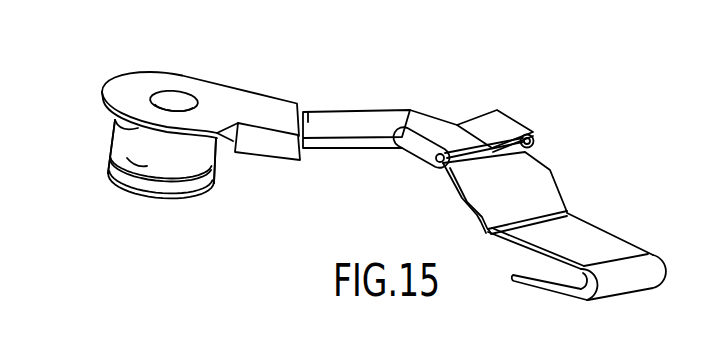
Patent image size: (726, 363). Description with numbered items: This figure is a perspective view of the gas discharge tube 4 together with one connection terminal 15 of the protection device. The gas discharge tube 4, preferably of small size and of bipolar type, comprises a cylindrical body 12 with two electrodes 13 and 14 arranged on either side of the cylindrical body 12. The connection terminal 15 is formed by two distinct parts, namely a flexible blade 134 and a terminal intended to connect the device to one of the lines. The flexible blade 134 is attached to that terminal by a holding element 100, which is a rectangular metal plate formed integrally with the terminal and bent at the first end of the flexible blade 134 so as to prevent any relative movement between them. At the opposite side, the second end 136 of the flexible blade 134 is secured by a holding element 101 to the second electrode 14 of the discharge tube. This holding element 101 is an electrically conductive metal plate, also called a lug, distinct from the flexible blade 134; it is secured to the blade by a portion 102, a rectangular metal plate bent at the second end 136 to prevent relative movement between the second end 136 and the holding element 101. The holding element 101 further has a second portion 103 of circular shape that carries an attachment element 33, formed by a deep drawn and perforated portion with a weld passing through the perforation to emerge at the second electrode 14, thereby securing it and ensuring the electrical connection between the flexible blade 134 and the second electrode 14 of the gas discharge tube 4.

The gas discharge tube 4 is at (100, 146).
The cylindrical body 12 is at (185, 163).
The electrode 13 is at (140, 199).
The second electrode 14 is at (113, 120).
The connection terminal 15 is at (593, 250).
The attachment element 33 is at (170, 102).
The holding element 100 is at (488, 132).
The holding element 101 is at (272, 118).
The portion 102 is at (281, 158).
The second portion 103 is at (131, 92).
The flexible blade 134 is at (352, 128).
The second end 136 is at (308, 111).